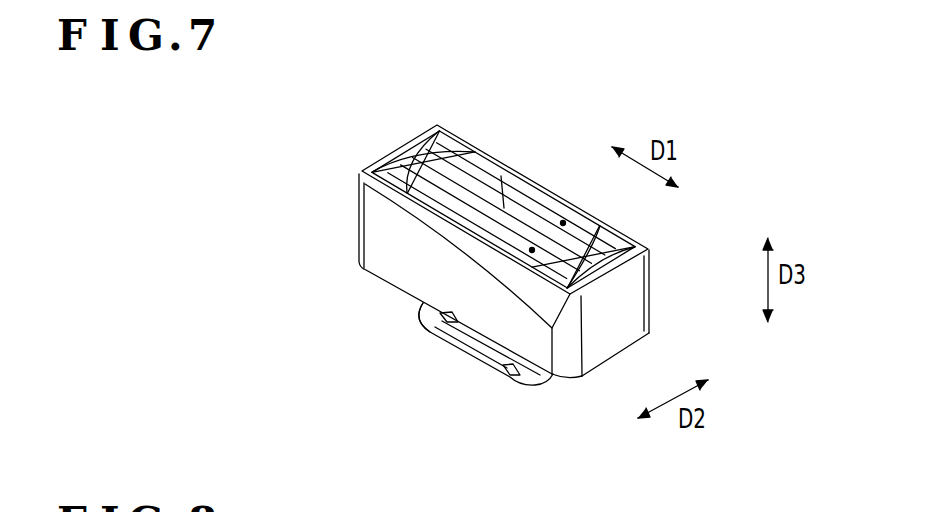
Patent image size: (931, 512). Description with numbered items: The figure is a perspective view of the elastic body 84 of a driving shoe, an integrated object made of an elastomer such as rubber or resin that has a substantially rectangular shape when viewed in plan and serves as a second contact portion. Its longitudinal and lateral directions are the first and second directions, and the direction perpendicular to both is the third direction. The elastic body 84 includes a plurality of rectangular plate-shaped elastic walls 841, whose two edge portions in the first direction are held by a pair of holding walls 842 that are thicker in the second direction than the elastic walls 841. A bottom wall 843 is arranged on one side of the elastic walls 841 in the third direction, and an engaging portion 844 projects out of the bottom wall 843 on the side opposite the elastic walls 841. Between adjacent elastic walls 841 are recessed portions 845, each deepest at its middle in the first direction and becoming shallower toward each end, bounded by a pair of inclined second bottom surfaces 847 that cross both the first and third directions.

The elastic body 84 is at (278, 133).
The elastic walls 841 is at (470, 235).
The holding walls 842 is at (383, 160).
The bottom wall 843 is at (565, 378).
The engaging portion 844 is at (427, 322).
The recessed portions 845 is at (532, 250).
The second bottom surfaces 847 is at (472, 152).